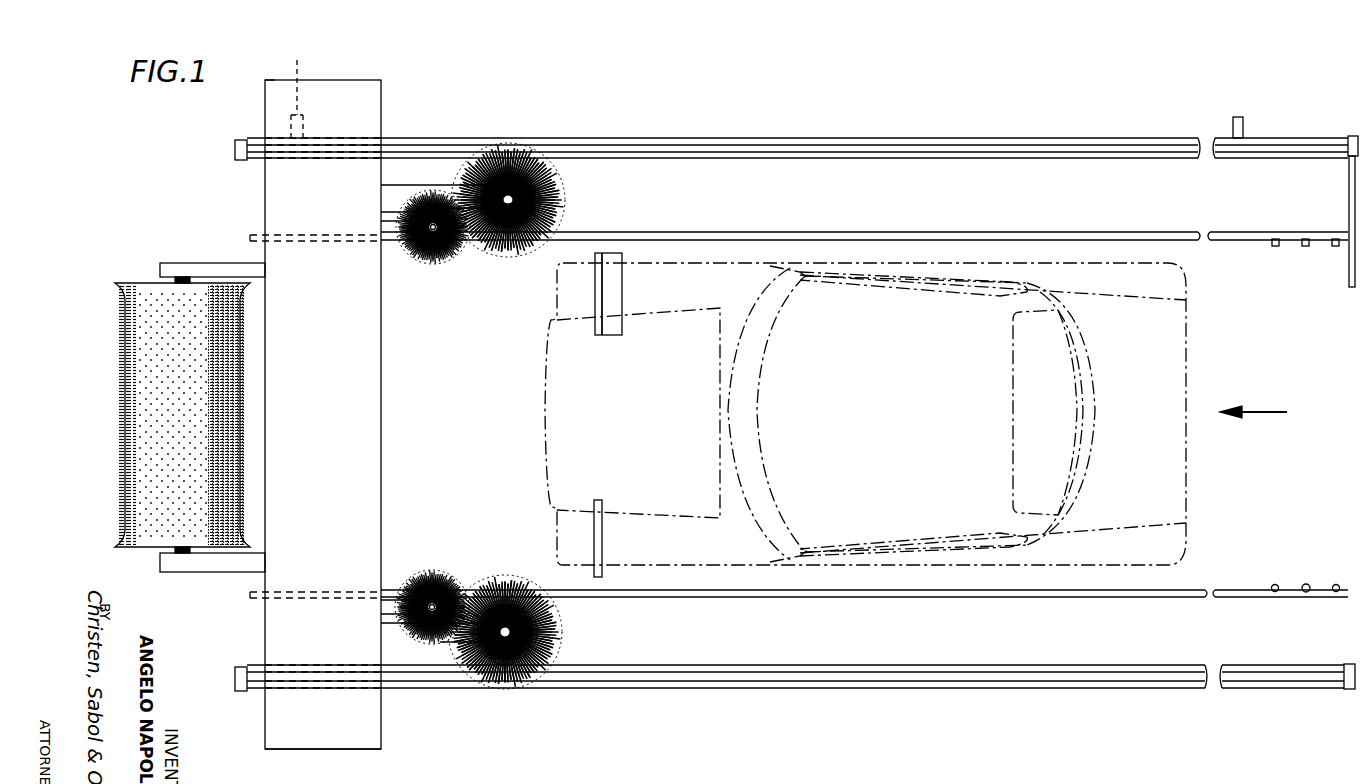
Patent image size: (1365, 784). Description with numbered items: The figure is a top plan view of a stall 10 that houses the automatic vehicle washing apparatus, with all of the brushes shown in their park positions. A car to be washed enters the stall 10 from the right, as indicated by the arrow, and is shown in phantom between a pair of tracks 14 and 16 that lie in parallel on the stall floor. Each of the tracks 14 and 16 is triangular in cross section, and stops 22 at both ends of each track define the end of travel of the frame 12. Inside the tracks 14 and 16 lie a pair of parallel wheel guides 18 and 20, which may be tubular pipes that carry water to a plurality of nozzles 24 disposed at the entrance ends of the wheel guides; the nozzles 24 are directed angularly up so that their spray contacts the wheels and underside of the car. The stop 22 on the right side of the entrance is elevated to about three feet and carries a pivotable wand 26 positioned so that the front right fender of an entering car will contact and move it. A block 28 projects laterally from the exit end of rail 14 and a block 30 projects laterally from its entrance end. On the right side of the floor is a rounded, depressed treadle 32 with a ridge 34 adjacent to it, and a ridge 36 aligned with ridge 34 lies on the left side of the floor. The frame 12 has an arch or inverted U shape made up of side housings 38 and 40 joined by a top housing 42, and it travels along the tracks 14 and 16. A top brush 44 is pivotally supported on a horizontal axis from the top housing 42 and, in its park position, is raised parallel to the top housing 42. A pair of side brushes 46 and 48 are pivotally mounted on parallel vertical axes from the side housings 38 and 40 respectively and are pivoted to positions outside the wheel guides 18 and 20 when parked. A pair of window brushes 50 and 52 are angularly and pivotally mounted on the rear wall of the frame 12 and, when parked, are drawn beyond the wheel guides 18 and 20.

The stall 10 is at (815, 137).
The frame 12 is at (345, 78).
The track 14 is at (992, 138).
The track 16 is at (1008, 690).
The wheel guide 18 is at (953, 232).
The wheel guide 20 is at (958, 598).
The stops 22 is at (235, 150).
The nozzles 24 is at (1336, 246).
The pivotable wand 26 is at (1349, 287).
The block 28 is at (299, 88).
The block 30 is at (1238, 117).
The treadle 32 is at (622, 290).
The ridge 34 is at (603, 253).
The ridge 36 is at (602, 548).
The side housing 38 is at (271, 80).
The side housing 40 is at (350, 749).
The top housing 42 is at (332, 423).
The top brush 44 is at (140, 409).
The side brush 46 is at (567, 190).
The side brush 48 is at (565, 634).
The window brush 50 is at (437, 263).
The window brush 52 is at (437, 572).